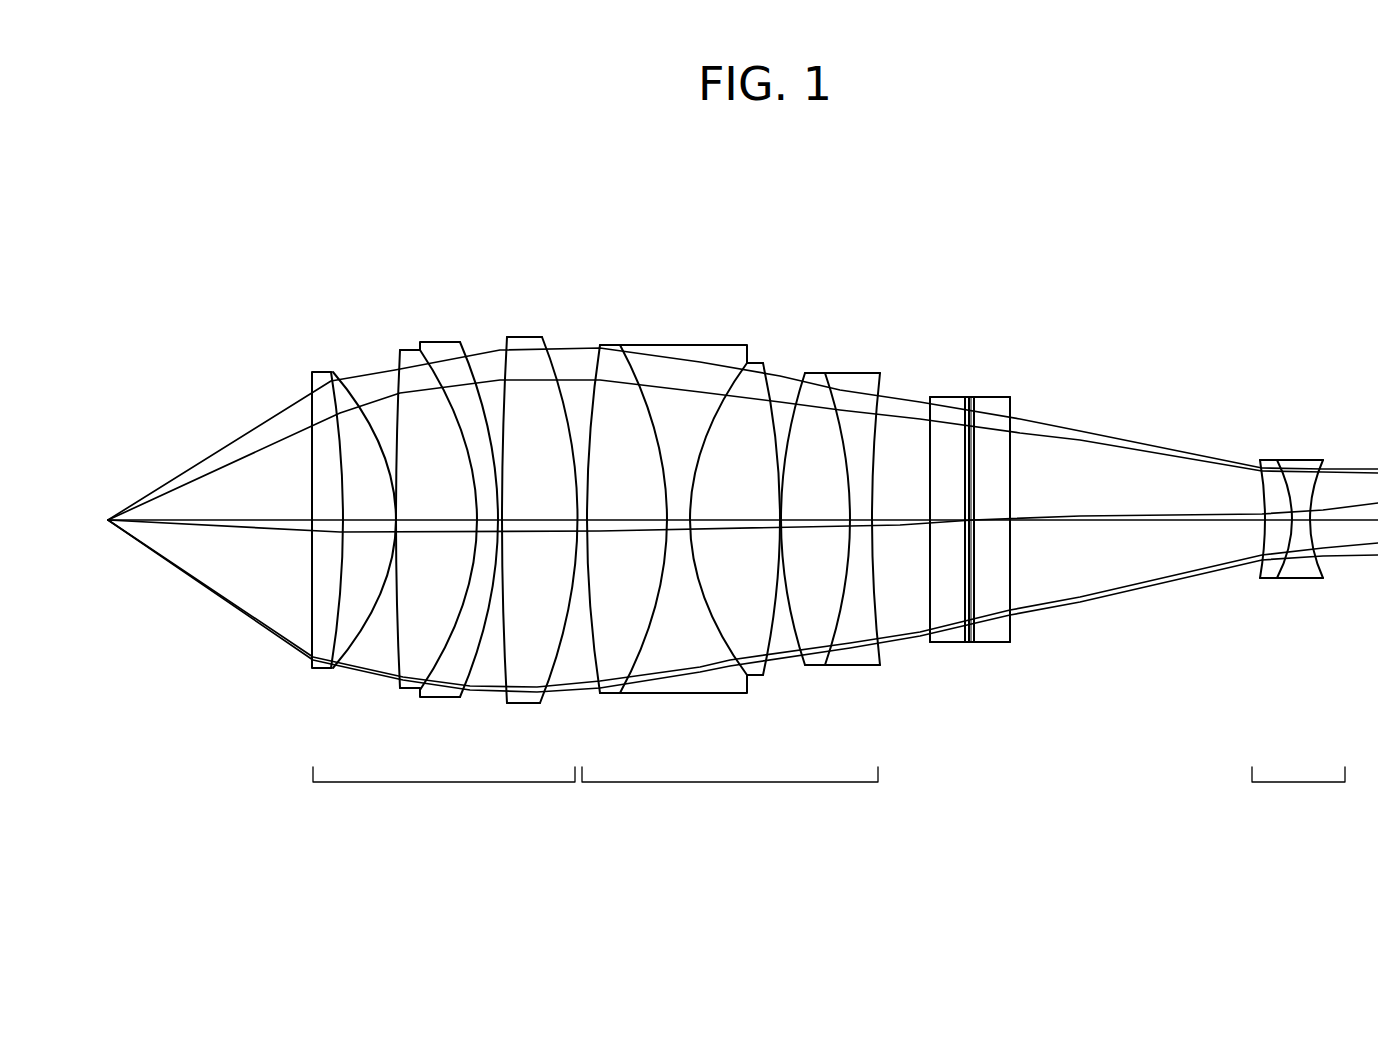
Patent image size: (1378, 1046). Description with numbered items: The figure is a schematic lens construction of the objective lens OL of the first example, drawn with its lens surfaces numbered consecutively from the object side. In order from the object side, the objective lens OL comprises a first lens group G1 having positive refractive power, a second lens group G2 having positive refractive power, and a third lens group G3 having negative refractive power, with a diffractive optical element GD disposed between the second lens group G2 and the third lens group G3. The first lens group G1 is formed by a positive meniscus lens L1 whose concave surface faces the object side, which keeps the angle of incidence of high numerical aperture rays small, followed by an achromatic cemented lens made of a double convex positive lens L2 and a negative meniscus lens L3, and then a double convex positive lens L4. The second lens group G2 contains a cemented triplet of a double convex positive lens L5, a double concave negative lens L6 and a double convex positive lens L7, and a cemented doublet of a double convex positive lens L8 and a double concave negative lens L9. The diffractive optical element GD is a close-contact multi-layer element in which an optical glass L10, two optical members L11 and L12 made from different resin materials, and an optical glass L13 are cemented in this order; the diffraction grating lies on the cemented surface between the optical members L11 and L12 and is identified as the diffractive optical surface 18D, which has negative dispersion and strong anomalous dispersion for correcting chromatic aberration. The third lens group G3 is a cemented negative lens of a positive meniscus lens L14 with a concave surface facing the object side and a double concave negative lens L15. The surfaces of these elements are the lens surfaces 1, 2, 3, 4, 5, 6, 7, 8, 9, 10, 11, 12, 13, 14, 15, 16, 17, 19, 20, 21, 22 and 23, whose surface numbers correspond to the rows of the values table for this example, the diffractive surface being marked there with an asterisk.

The objective lens OL is at (1266, 221).
The first lens group G1 is at (430, 533).
The second lens group G2 is at (720, 533).
The third lens group G3 is at (1273, 589).
The diffractive optical element GD is at (888, 283).
The positive meniscus lens L1 is at (320, 370).
The double convex positive lens L2 is at (411, 349).
The negative meniscus lens L3 is at (446, 341).
The double convex positive lens L4 is at (522, 336).
The double convex positive lens L5 is at (607, 344).
The double concave negative lens L6 is at (687, 344).
The double convex positive lens L7 is at (752, 362).
The double convex positive lens L8 is at (816, 372).
The double concave negative lens L9 is at (858, 372).
The optical glass L10 is at (941, 397).
The optical member L11 is at (967, 397).
The optical member L12 is at (973, 397).
The optical glass L13 is at (998, 397).
The positive meniscus lens L14 is at (1268, 459).
The double concave negative lens L15 is at (1300, 459).
The lens surface 1 is at (313, 640).
The lens surface 2 is at (345, 650).
The lens surface 3 is at (398, 666).
The lens surface 4 is at (432, 670).
The lens surface 5 is at (468, 678).
The lens surface 6 is at (503, 674).
The lens surface 7 is at (551, 675).
The lens surface 8 is at (597, 675).
The lens surface 9 is at (630, 670).
The lens surface 10 is at (714, 626).
The lens surface 11 is at (765, 670).
The lens surface 12 is at (795, 637).
The lens surface 13 is at (837, 625).
The lens surface 14 is at (879, 645).
The lens surface 15 is at (928, 608).
The lens surface 16 is at (964, 614).
The lens surface 17 is at (969, 615).
The diffractive optical surface 18D is at (1004, 575).
The lens surface 19 is at (977, 614).
The lens surface 20 is at (1011, 625).
The lens surface 21 is at (1261, 542).
The lens surface 22 is at (1282, 560).
The lens surface 23 is at (1321, 560).